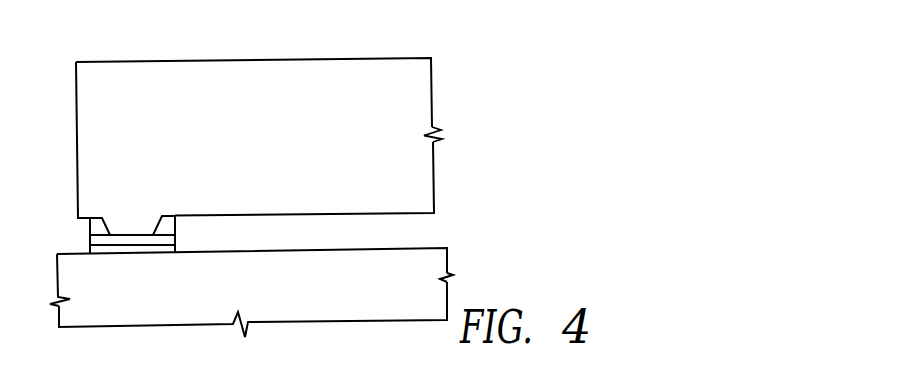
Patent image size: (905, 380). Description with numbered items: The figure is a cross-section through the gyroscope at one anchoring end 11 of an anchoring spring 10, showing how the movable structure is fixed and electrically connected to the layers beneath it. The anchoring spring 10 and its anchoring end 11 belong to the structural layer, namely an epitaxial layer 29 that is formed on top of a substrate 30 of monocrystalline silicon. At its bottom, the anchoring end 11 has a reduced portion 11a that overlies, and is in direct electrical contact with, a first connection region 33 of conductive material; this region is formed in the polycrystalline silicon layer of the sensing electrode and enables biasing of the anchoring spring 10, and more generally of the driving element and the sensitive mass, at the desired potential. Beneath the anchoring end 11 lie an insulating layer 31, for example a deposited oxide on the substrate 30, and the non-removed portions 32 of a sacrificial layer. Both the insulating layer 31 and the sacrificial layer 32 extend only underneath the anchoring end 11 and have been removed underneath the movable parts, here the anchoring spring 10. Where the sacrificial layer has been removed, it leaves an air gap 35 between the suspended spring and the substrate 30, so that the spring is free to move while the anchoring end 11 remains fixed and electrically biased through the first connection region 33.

The anchoring spring 10 is at (303, 137).
The anchoring end 11 is at (271, 141).
The reduced portion 11a is at (133, 223).
The epitaxial layer 29 is at (414, 132).
The substrate 30 is at (420, 266).
The insulating layer 31 is at (177, 247).
The non-removed portions of sacrificial layer 32 is at (90, 228).
The first connection region 33 is at (99, 236).
The air gap 35 is at (440, 231).